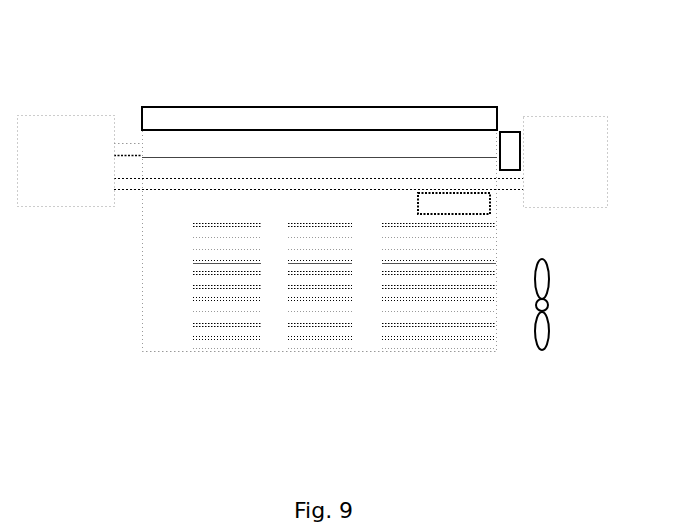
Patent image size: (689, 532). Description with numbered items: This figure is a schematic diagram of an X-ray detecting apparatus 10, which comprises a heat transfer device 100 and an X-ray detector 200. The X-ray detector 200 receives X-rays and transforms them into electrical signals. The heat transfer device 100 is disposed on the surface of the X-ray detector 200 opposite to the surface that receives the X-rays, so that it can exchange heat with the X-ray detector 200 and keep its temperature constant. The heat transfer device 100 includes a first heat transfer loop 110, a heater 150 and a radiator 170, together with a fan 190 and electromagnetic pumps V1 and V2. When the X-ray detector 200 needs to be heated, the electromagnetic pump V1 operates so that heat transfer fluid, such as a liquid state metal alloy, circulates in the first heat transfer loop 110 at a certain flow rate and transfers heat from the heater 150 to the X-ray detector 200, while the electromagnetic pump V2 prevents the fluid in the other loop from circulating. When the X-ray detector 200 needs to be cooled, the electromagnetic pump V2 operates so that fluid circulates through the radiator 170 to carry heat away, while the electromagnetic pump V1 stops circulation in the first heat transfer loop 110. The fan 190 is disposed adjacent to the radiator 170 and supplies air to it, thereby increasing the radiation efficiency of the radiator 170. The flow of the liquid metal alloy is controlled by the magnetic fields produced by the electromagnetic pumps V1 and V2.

The X-ray detecting apparatus 10 is at (316, 22).
The heat transfer device 100 is at (142, 300).
The first heat transfer loop 110 is at (132, 191).
The heater 150 is at (99, 115).
The radiator 170 is at (185, 351).
The fan 190 is at (549, 278).
The X-ray detector 200 is at (360, 107).
The electromagnetic pump V1 is at (508, 131).
The electromagnetic pump V2 is at (490, 207).